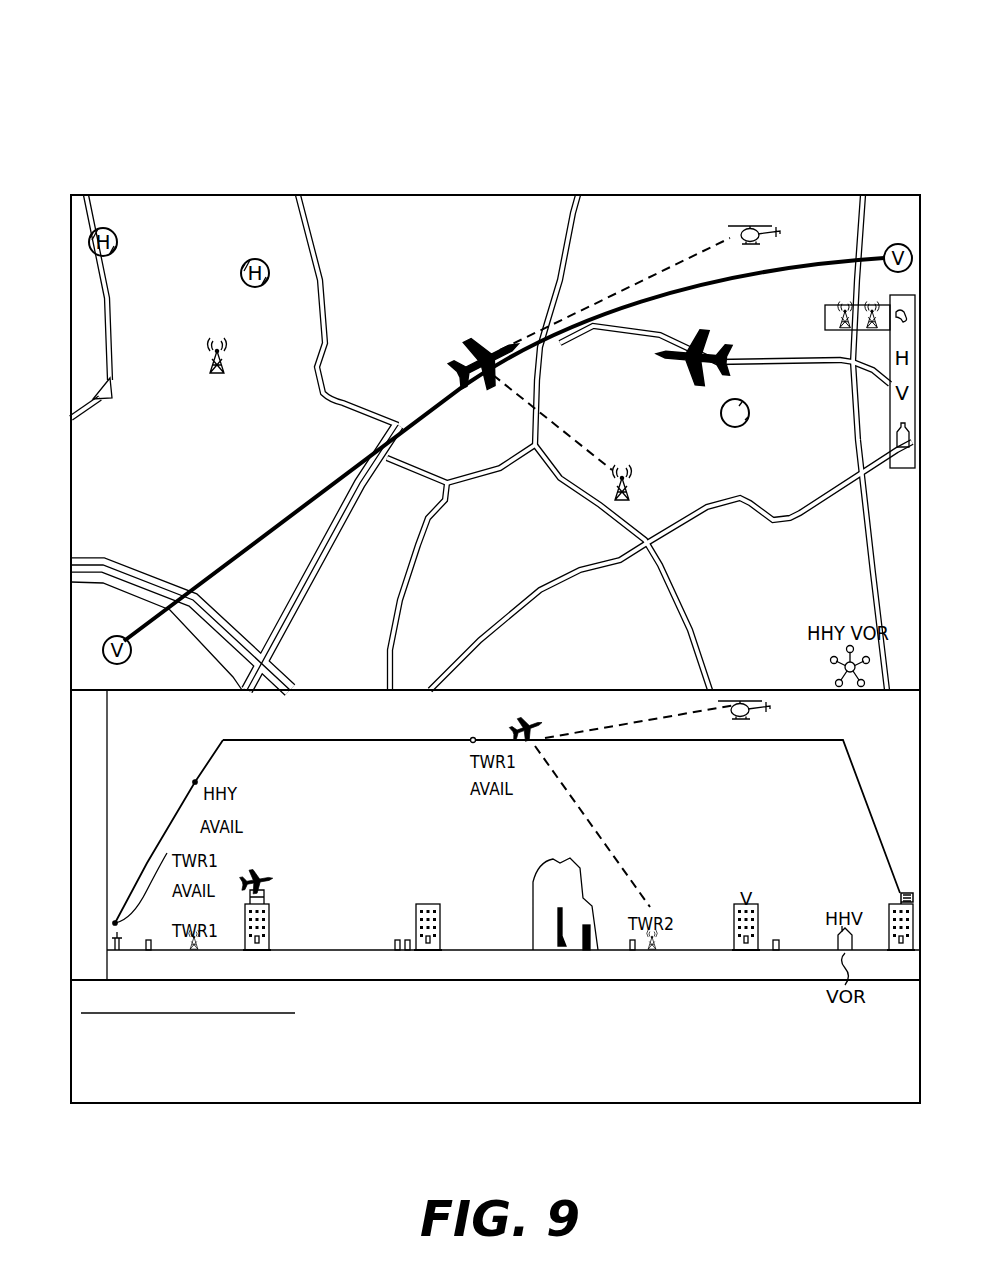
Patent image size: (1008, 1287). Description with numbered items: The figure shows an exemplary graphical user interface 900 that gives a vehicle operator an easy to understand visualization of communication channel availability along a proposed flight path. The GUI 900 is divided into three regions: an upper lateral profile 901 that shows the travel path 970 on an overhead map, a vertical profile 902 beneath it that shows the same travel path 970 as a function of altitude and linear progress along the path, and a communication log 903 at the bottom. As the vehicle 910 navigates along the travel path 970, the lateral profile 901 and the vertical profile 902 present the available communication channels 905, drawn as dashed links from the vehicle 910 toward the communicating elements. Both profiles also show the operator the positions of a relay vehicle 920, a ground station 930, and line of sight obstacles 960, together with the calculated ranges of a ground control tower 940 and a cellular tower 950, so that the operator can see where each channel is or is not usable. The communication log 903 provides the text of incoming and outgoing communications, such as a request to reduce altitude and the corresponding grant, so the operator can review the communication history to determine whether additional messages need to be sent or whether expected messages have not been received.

The graphical user interface 900 is at (183, 60).
The lateral profile 901 is at (71, 209).
The vertical profile 902 is at (71, 744).
The communication log 903 is at (103, 1103).
The available communication channels 905 is at (567, 437).
The vehicle 910 is at (470, 385).
The relay vehicle 920 is at (700, 368).
The ground station 930 is at (115, 945).
The ground control tower 940 is at (207, 362).
The cellular tower 950 is at (637, 500).
The line of sight obstacle 960 is at (740, 427).
The travel path 970 is at (227, 563).